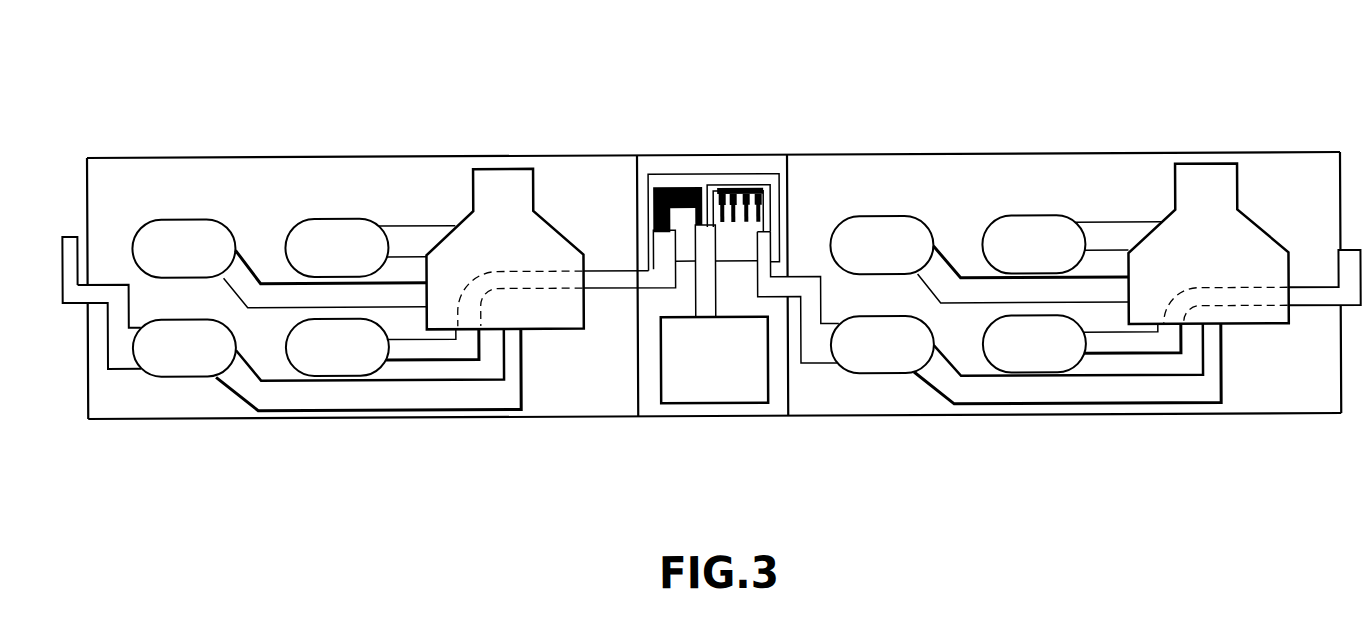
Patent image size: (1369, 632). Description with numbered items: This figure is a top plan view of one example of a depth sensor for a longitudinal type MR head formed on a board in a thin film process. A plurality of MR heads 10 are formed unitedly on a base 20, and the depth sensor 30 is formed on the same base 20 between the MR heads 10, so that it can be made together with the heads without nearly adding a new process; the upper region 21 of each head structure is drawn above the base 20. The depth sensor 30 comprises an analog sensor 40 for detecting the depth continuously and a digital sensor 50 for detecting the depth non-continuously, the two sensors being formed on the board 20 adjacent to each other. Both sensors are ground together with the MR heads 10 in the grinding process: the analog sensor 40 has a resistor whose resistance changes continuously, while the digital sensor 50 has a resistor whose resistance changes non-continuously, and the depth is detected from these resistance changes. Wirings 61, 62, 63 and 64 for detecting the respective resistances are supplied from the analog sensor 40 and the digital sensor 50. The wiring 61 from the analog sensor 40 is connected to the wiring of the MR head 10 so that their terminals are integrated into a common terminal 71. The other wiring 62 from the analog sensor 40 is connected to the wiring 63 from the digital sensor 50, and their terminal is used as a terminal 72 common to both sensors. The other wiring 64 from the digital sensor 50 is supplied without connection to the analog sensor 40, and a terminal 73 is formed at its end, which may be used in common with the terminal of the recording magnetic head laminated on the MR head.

The MR head 10 is at (630, 118).
The base 20 is at (153, 399).
The upper surface of substrate 21 is at (392, 159).
The depth sensor 30 is at (780, 56).
The analog sensor 40 is at (675, 187).
The digital sensor 50 is at (749, 187).
The wiring 61 is at (607, 285).
The wiring 62 is at (700, 280).
The wiring 63 is at (722, 193).
The wiring 64 is at (817, 346).
The common terminal 71 is at (333, 360).
The terminal 72 is at (727, 378).
The terminal 73 is at (877, 352).